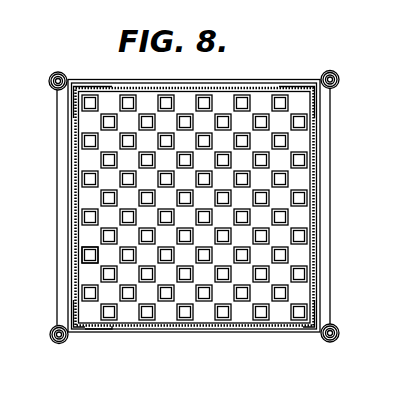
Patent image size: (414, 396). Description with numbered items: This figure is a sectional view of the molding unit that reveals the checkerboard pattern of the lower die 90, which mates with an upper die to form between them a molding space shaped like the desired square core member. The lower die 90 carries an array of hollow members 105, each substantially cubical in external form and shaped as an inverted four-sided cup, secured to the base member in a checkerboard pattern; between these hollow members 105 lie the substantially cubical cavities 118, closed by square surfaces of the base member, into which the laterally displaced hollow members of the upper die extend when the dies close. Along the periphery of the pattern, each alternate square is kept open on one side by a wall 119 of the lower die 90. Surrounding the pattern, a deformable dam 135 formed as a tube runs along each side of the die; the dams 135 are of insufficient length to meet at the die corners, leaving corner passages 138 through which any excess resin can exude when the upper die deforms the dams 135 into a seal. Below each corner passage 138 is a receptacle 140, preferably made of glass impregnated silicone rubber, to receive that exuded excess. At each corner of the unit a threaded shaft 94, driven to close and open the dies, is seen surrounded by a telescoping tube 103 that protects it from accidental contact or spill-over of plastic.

The lower die 90 is at (292, 155).
The threaded shaft 94 is at (328, 341).
The telescoping tube 103 is at (331, 328).
The hollow member 105 is at (93, 181).
The cubical cavity 118 is at (93, 239).
The wall 119 is at (84, 257).
The dam 135 is at (76, 146).
The corner passage 138 is at (77, 325).
The receptacle 140 is at (68, 118).